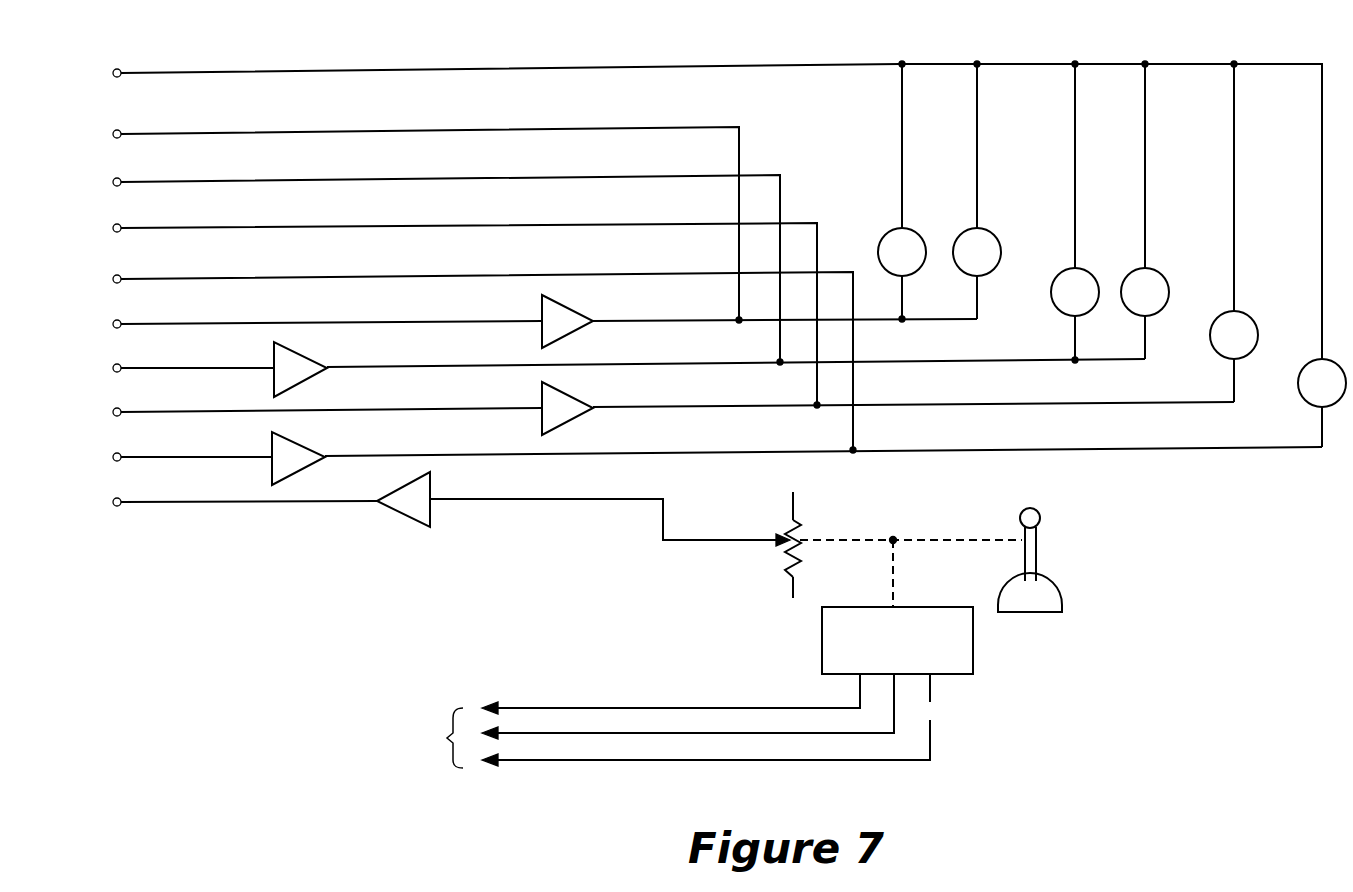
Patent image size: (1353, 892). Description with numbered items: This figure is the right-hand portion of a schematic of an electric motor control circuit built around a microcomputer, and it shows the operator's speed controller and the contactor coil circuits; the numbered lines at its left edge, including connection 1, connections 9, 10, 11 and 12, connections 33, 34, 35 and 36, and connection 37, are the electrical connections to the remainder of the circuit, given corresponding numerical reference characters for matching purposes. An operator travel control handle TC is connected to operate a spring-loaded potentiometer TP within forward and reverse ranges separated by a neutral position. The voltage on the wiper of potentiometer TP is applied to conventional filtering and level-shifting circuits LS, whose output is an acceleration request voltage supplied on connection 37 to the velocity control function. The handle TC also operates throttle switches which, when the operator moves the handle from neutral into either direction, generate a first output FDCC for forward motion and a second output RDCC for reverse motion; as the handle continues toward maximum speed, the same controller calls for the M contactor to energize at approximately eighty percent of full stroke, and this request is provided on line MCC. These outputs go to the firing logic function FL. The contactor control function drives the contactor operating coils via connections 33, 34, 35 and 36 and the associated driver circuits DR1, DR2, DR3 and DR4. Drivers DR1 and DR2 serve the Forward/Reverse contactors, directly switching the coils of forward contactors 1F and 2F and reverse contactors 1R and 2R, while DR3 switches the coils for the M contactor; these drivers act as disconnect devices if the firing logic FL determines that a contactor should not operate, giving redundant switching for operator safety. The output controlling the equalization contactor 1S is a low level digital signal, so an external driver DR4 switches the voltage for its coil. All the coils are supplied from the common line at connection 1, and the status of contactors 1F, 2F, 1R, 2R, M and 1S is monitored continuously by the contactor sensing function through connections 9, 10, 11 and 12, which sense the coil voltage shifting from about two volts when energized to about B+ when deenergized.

The power supply line terminal 1 is at (707, 210).
The connection 9 is at (417, 222).
The connection 10 is at (430, 267).
The connection 11 is at (449, 312).
The connection 12 is at (467, 360).
The connection 33 is at (527, 324).
The connection 34 is at (611, 368).
The connection 35 is at (656, 412).
The connection 36 is at (700, 457).
The level sensor input terminal 37 is at (227, 502).
The driver circuit DR1 is at (560, 302).
The driver circuit DR2 is at (300, 352).
The driver circuit DR3 is at (575, 397).
The external driver DR4 is at (300, 441).
The filtering and level-shifting circuits LS is at (405, 515).
The spring-loaded potentiometer TP is at (800, 515).
The operator travel control handle TC is at (1045, 612).
The forward contactor 1F is at (902, 191).
The forward contactor 2F is at (977, 191).
The reverse contactor 1R is at (1075, 212).
The reverse contactor 2R is at (1145, 211).
The M contactor M is at (1234, 233).
The equalization contactor 1S is at (1322, 403).
The Firing Logic function FL is at (647, 687).
The forward direction contactor control output FDCC is at (540, 708).
The reverse direction contactor control output RDCC is at (605, 733).
The M contactor control line MCC is at (700, 760).